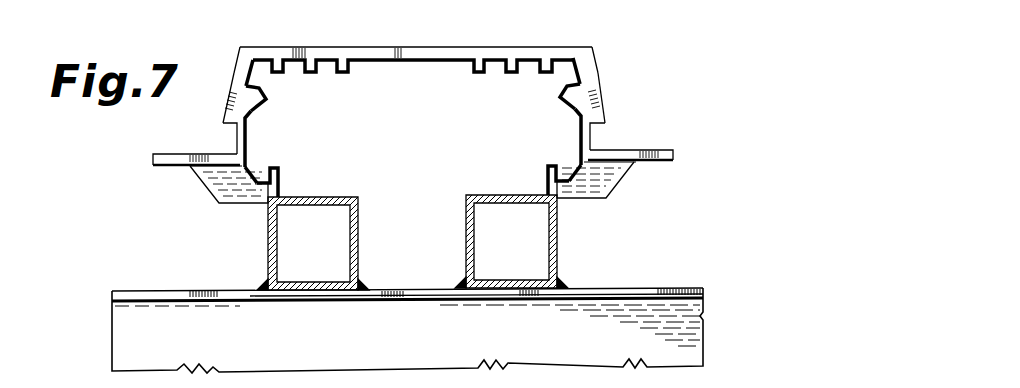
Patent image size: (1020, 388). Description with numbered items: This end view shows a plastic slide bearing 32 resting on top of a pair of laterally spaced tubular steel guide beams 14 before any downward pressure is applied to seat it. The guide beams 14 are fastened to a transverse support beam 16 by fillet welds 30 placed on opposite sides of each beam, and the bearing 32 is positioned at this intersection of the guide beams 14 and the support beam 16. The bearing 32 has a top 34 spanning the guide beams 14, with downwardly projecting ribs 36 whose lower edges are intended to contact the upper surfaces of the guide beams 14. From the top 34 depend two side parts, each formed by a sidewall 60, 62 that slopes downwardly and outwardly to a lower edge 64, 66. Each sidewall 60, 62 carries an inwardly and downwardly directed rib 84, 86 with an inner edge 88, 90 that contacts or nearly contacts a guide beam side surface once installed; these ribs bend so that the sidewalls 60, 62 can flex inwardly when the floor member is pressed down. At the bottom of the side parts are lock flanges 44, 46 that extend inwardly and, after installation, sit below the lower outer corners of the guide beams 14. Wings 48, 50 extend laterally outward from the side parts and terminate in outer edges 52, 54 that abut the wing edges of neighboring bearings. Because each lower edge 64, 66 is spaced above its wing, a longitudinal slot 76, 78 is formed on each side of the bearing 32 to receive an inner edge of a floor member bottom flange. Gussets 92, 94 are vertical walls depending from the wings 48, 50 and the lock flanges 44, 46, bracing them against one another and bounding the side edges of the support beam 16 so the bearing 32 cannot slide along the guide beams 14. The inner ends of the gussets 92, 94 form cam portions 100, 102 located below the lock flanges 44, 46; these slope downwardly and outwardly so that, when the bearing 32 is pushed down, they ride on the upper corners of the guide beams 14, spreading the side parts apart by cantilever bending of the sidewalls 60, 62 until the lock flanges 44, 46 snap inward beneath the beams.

The guide beam 14 is at (358, 220).
The traverse support beam 16 is at (677, 289).
The fillet weld 30 is at (264, 286).
The bearing 32 is at (607, 88).
The top 34 is at (423, 47).
The downwardly projecting ribs 36 is at (292, 74).
The lock flange 44 is at (283, 171).
The lock flange 46 is at (546, 166).
The wing 48 is at (191, 169).
The wing 50 is at (657, 162).
The outer edge 52 is at (153, 159).
The outer edge 54 is at (673, 156).
The sidewall 60 is at (236, 72).
The sidewall 62 is at (595, 75).
The lower edge 64 is at (224, 125).
The lower edge 66 is at (607, 128).
The step 76 is at (223, 141).
The longitudinal slot 78 is at (597, 138).
The rib 84 is at (270, 83).
The rib 86 is at (560, 86).
The inner edge 88 is at (262, 95).
The inner edge 90 is at (566, 98).
The gusset 92 is at (216, 191).
The gusset 94 is at (612, 182).
The cam portion 100 is at (281, 189).
The cam portion 102 is at (546, 173).